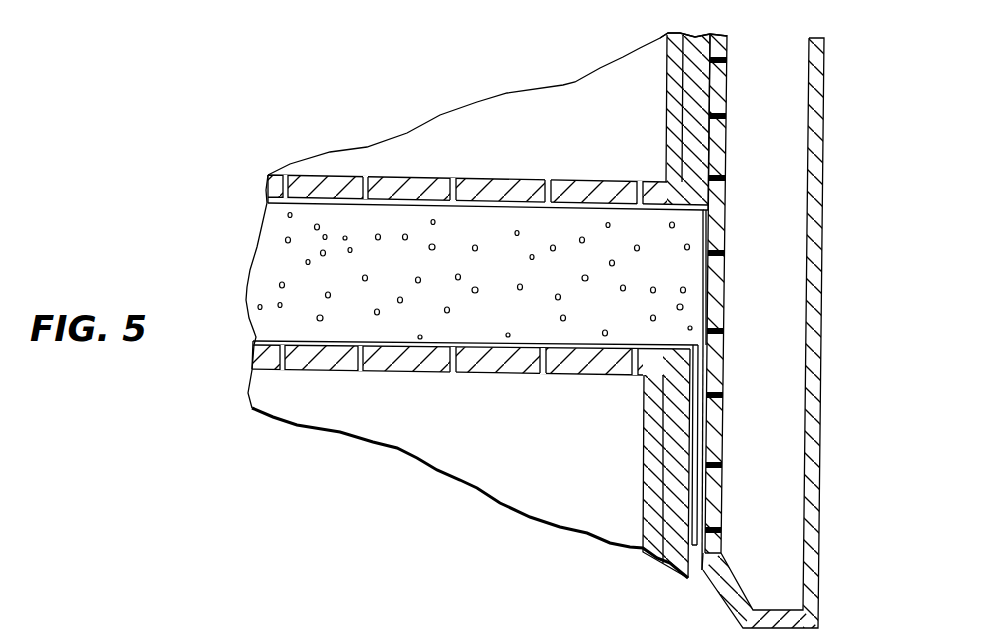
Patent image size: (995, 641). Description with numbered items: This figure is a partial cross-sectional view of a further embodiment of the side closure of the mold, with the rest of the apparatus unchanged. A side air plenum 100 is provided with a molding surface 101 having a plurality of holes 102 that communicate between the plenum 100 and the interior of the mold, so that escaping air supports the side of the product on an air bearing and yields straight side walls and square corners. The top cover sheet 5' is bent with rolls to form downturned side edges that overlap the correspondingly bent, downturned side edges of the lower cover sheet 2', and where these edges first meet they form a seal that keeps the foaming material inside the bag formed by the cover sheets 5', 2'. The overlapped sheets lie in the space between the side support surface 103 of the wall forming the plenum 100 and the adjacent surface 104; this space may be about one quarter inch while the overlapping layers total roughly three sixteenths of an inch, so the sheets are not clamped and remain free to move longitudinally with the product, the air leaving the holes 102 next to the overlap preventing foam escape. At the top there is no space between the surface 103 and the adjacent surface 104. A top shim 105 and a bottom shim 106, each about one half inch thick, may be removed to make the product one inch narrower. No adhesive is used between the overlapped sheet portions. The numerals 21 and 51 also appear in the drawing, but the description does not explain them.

The side air plenum 100 is at (797, 162).
The molding surface 101 is at (703, 277).
The holes 102 is at (722, 253).
The side support surface 103 is at (707, 36).
The adjacent surface 104 is at (718, 107).
The top shim 105 is at (703, 82).
The bottom shim 106 is at (670, 418).
The sheet liner 21 is at (693, 405).
The web 51 is at (703, 435).
The top cover sheet 5' is at (488, 172).
The lower cover sheet 2' is at (471, 382).